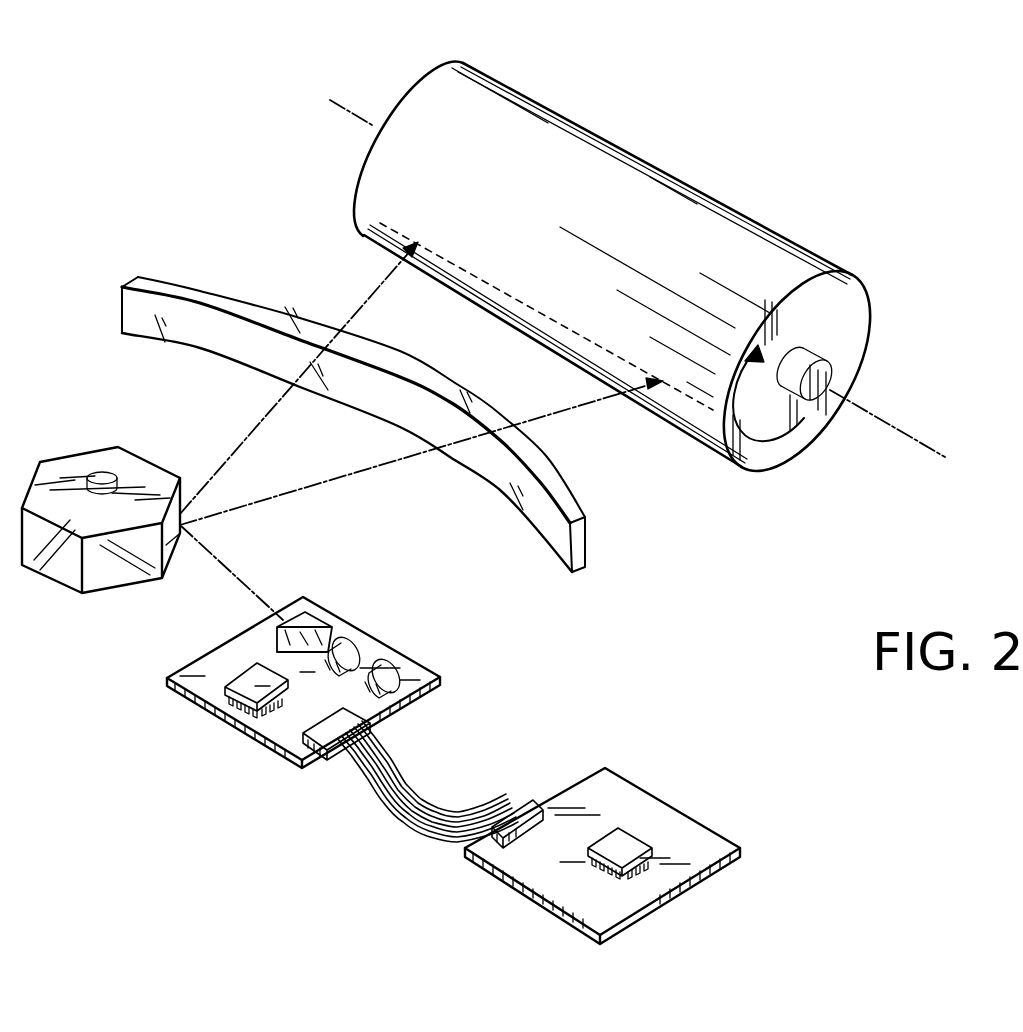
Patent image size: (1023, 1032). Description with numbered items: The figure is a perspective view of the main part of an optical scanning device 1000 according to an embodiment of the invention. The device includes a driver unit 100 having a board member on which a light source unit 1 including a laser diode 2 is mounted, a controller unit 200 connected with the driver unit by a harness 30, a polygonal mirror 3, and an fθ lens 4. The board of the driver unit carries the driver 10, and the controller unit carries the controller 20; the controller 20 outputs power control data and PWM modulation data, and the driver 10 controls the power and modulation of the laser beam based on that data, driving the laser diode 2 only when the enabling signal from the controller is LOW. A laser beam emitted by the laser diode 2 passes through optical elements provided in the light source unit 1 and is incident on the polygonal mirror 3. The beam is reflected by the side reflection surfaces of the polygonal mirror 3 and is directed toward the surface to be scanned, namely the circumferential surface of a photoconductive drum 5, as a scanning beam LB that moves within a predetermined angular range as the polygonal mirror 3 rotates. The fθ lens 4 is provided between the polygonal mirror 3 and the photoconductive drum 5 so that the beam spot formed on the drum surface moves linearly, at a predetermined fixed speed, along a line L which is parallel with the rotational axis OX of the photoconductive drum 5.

The light source unit 1 is at (268, 638).
The laser diode 2 is at (375, 647).
The polygonal mirror 3 is at (65, 468).
The fθ lens 4 is at (263, 338).
The photoconductive drum 5 is at (650, 190).
The driver 10 is at (257, 710).
The controller 20 is at (620, 840).
The harness 30 is at (398, 830).
The driver unit 100 is at (195, 698).
The controller unit 200 is at (602, 848).
The optical scanning device 1000 is at (815, 808).
The line L is at (672, 390).
The scanning beam LB is at (330, 497).
The rotational axis OX is at (900, 430).